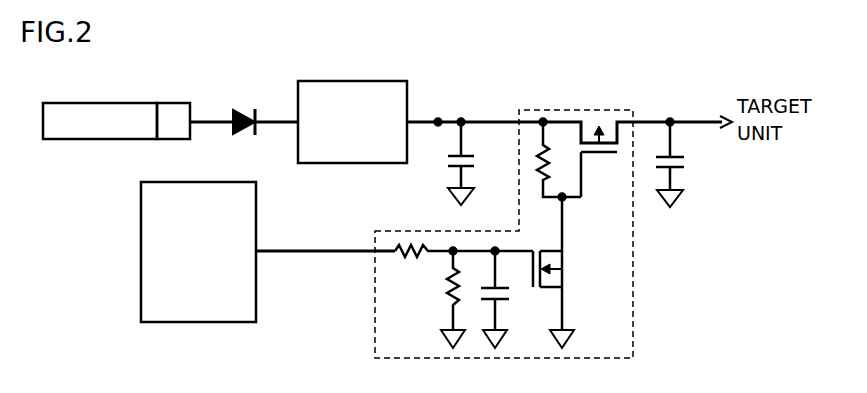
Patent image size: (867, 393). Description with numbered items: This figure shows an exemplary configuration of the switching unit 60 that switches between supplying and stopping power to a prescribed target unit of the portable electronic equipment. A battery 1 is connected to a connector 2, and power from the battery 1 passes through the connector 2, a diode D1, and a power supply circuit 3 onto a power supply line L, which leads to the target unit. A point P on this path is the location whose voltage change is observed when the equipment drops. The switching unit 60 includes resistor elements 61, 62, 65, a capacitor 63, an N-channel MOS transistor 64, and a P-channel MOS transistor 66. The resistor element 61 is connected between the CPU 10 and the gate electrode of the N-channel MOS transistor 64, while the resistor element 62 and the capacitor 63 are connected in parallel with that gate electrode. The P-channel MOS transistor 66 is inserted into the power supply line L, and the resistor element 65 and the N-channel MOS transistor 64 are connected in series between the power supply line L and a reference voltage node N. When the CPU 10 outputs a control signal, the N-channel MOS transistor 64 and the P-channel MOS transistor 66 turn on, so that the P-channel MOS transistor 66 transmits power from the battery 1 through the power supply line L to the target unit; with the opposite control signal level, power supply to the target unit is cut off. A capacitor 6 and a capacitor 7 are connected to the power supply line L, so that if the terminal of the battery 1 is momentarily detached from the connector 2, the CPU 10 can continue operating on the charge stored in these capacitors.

The battery 1 is at (103, 103).
The connector 2 is at (173, 103).
The diode D1 is at (250, 108).
The power supply circuit 3 is at (370, 81).
The point P is at (438, 118).
The capacitor 6 is at (446, 161).
The capacitor 7 is at (688, 162).
The power supply line L is at (690, 118).
The CPU 10 is at (218, 182).
The switching unit 60 is at (535, 110).
The resistor element 61 is at (413, 244).
The resistor element 62 is at (447, 290).
The capacitor 63 is at (512, 294).
The N-channel MOS transistor 64 is at (568, 272).
The resistor element 65 is at (535, 161).
The P-channel MOS transistor 66 is at (603, 121).
The reference voltage node N is at (566, 330).